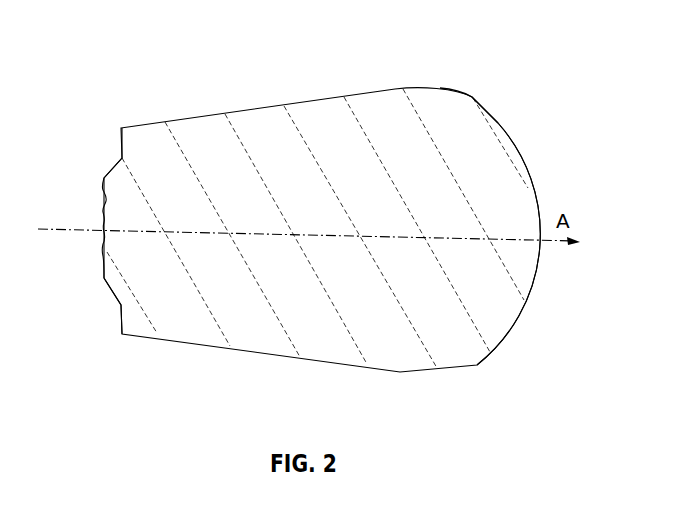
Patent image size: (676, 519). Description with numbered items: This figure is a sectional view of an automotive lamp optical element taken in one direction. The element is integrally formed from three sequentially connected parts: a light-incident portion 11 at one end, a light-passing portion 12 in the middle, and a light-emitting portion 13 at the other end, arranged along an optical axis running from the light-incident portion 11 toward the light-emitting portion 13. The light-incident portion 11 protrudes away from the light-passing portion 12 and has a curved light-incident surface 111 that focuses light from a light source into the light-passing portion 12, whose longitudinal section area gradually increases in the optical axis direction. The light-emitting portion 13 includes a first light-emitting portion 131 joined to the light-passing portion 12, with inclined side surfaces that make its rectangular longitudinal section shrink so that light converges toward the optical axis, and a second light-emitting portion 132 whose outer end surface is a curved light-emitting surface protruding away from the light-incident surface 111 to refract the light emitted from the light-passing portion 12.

The light-incident portion 11 is at (78, 254).
The light-incident surface 111 is at (104, 276).
The light-passing portion 12 is at (275, 138).
The light-emitting portion 13 is at (503, 190).
The first light-emitting portion 131 is at (460, 93).
The second light-emitting portion 132 is at (498, 123).